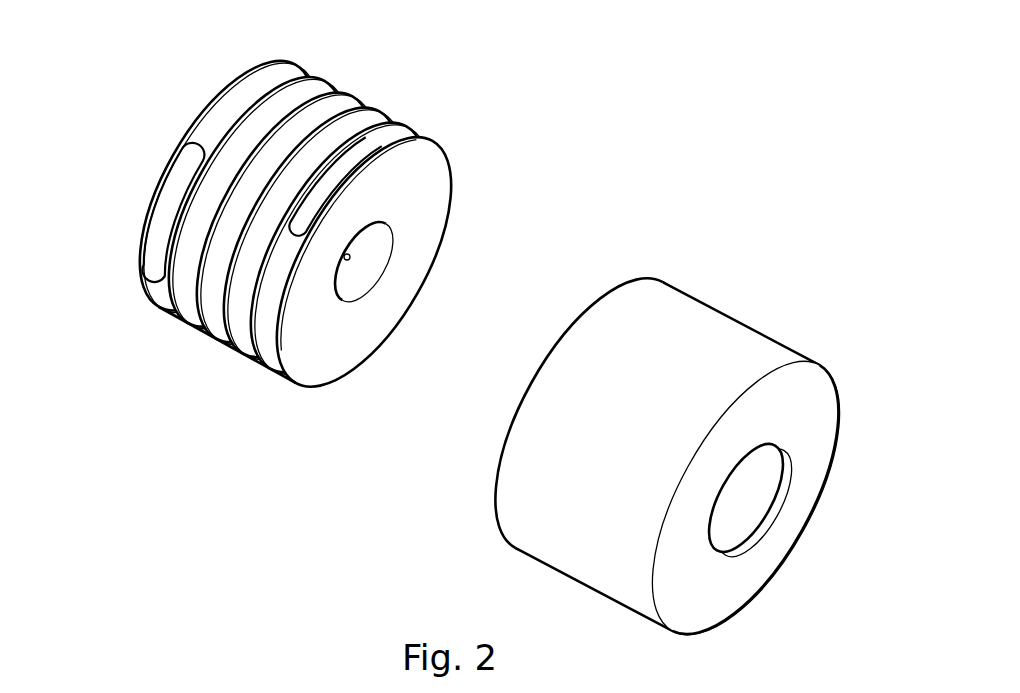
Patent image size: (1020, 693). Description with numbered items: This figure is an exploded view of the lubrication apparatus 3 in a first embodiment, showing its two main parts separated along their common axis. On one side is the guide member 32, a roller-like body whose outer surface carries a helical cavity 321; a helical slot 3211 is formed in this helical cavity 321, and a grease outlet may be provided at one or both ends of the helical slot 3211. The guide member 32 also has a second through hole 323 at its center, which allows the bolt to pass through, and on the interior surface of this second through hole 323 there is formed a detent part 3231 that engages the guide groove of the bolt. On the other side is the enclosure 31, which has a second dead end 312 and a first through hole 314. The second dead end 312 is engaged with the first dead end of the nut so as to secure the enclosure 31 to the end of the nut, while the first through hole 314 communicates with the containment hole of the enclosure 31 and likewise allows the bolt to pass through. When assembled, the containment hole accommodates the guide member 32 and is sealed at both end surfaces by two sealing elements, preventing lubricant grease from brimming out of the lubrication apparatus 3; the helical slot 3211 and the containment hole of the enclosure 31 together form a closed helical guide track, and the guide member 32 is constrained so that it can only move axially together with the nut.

The lubrication apparatus 3 is at (461, 342).
The guide member 32 is at (313, 231).
The helical cavity 321 is at (173, 302).
The helical slot 3211 is at (192, 317).
The second through hole 323 is at (377, 253).
The detent part 3231 is at (349, 259).
The enclosure 31 is at (651, 439).
The second dead end 312 is at (497, 487).
The first through hole 314 is at (765, 484).